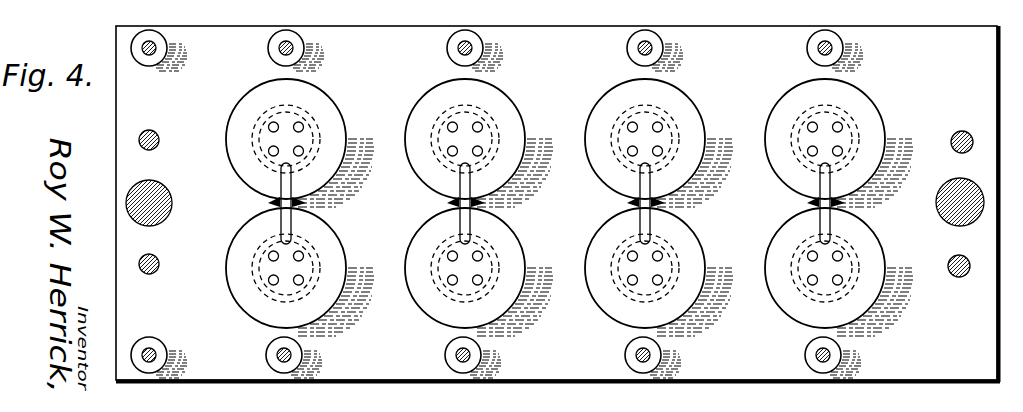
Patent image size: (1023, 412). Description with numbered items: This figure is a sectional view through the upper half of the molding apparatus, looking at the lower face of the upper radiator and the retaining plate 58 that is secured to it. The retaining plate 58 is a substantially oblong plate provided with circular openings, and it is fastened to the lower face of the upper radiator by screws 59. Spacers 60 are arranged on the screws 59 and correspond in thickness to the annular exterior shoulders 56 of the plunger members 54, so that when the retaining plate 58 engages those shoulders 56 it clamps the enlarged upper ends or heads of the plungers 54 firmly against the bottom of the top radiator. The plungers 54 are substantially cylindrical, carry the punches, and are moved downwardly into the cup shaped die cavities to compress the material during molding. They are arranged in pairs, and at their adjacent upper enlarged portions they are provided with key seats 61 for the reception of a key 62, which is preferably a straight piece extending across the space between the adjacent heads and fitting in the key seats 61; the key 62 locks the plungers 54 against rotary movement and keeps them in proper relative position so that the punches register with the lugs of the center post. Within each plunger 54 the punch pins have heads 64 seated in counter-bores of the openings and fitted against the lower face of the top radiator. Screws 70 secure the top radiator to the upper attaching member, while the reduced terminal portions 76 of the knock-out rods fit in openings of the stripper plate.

The plunger member 54 is at (440, 125).
The exterior shoulder 56 is at (606, 96).
The retaining plate 58 is at (120, 113).
The screw 59 is at (149, 56).
The spacer 60 is at (157, 48).
The key seat 61 is at (278, 177).
The key 62 is at (280, 205).
The head 64 is at (268, 152).
The screw 70 is at (138, 140).
The reduced lower terminal portion 76 is at (134, 192).